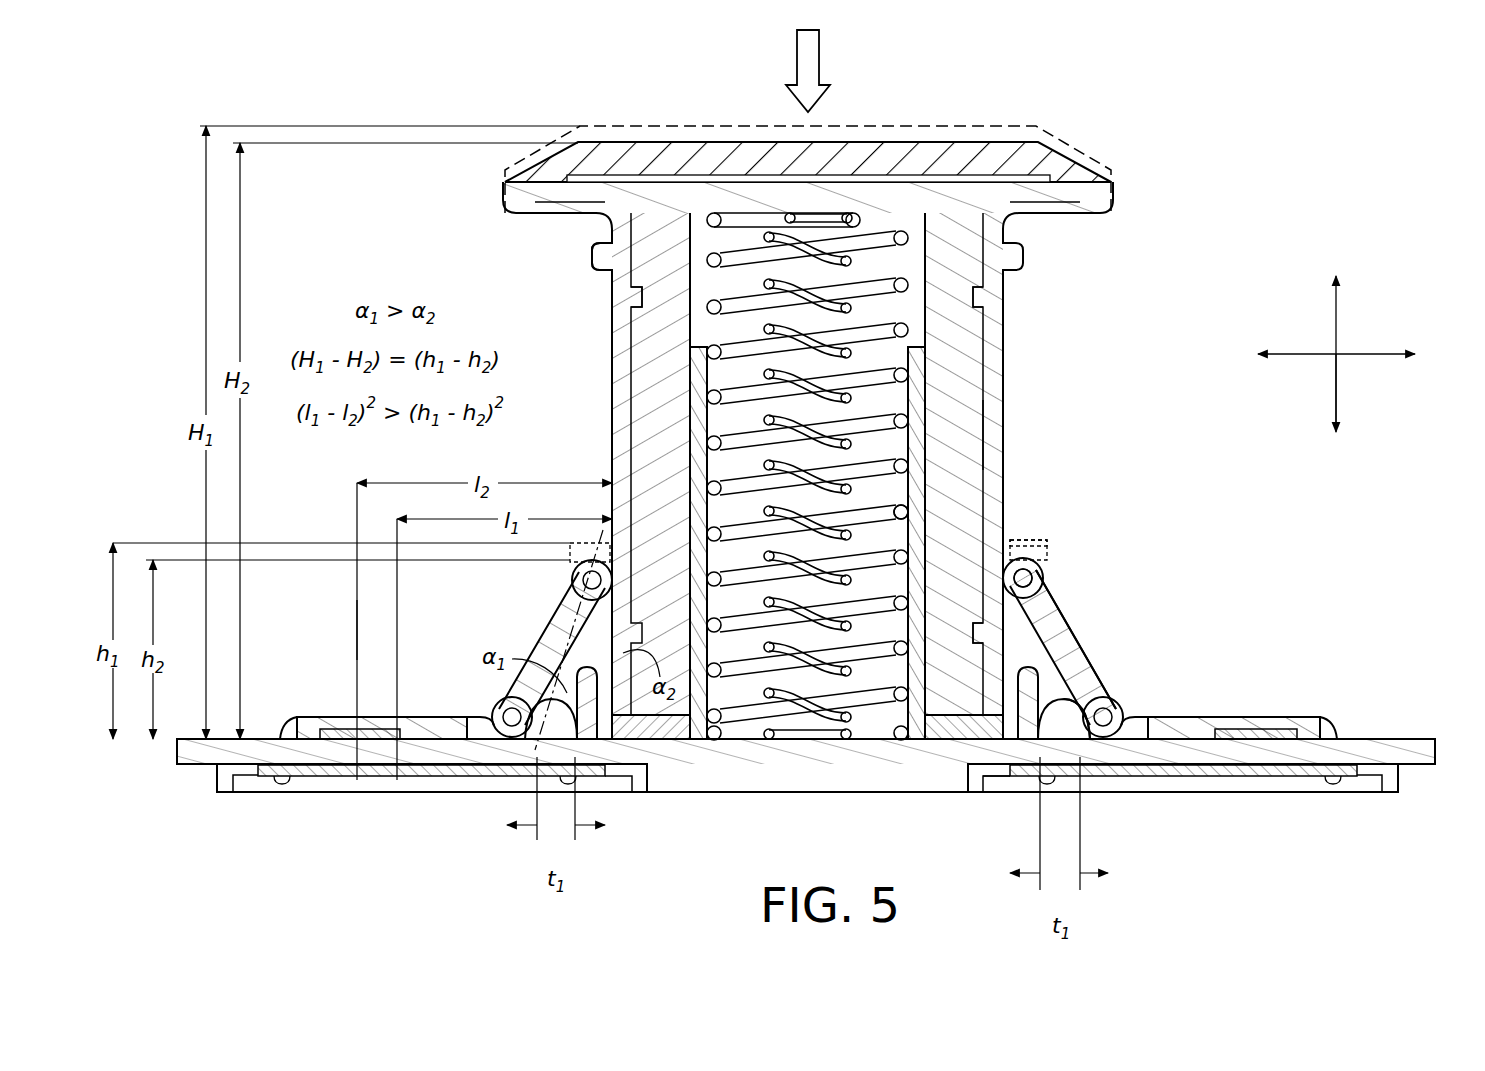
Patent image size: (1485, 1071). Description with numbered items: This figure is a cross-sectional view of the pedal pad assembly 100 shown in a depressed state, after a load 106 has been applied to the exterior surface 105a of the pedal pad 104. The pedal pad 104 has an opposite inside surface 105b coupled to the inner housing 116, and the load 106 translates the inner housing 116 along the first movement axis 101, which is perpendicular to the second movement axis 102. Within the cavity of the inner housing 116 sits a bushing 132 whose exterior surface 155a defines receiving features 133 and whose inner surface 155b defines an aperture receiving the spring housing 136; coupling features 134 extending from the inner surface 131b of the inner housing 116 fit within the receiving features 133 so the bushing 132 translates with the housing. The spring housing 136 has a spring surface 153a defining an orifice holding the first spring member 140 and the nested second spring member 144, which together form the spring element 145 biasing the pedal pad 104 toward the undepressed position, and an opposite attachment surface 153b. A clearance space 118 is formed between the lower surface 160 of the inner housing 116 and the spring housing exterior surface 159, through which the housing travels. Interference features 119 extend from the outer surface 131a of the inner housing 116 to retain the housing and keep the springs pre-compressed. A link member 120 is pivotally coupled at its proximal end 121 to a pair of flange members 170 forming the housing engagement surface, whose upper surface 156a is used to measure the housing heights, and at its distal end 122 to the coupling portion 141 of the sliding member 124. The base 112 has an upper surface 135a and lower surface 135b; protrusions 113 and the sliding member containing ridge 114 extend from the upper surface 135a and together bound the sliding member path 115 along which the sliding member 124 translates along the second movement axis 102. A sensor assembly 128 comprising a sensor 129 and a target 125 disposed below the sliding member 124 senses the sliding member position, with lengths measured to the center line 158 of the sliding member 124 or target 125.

The pedal pad assembly 100 is at (1236, 164).
The first movement axis 101 is at (1338, 318).
The second movement axis 102 is at (1374, 356).
The pedal pad 104 is at (705, 141).
The exterior surface 105a is at (976, 124).
The inside surface 105b is at (1108, 220).
The load 106 is at (822, 70).
The base 112 is at (1398, 738).
The protrusion 113 is at (1022, 660).
The sliding member containing ridge 114 is at (1335, 728).
The sliding member path 115 is at (1318, 662).
The inner housing 116 is at (1005, 335).
The clearance space 118 is at (985, 742).
The interference feature 119 is at (594, 256).
The link member 120 is at (1066, 625).
The proximal end 121 is at (1033, 578).
The distal end 122 is at (1105, 715).
The sliding member 124 is at (1202, 700).
The target 125 is at (338, 718).
The sensor assembly 128 is at (376, 798).
The sensor 129 is at (430, 778).
The outer surface 131a is at (1012, 432).
The inner surface 131b is at (975, 462).
The bushing 132 is at (986, 358).
The receiving feature 133 is at (640, 314).
The coupling feature 134 is at (985, 297).
The upper surface 135a is at (1425, 735).
The lower surface 135b is at (1392, 797).
The spring housing 136 is at (928, 352).
The first spring member 140 is at (882, 498).
The coupling portion 141 is at (476, 720).
The second spring member 144 is at (882, 552).
The spring element 145 is at (745, 740).
The spring surface 153a is at (722, 545).
The attachment surface 153b is at (934, 633).
The exterior surface 155a is at (628, 292).
The inner surface 155b is at (920, 312).
The upper surface 156a is at (1020, 540).
The center line 158 is at (355, 633).
The spring housing exterior surface 159 is at (940, 742).
The lower surface 160 is at (998, 785).
The flange member 170 is at (1050, 565).